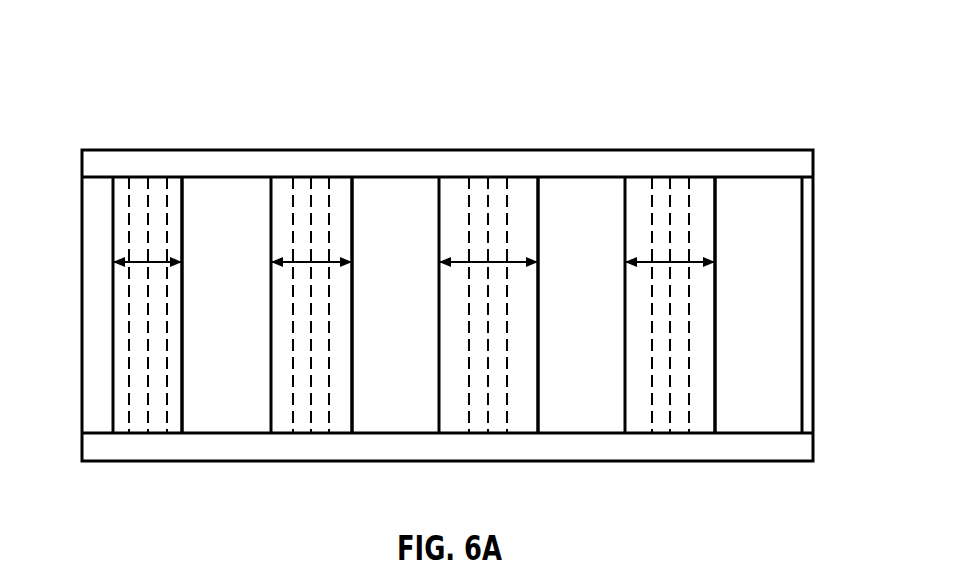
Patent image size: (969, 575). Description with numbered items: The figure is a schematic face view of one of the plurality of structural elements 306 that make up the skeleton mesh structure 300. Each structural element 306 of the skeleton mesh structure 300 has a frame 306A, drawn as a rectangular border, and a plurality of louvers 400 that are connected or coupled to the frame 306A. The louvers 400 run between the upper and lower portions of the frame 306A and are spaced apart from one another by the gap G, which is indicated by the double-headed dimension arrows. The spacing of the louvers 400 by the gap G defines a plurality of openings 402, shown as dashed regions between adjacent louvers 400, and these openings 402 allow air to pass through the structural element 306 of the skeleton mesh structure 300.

The skeleton mesh structure 300 is at (800, 48).
The structural element 306 is at (738, 450).
The frame 306A is at (124, 451).
The louver 400 is at (233, 403).
The opening 402 is at (301, 186).
The gap G is at (138, 260).